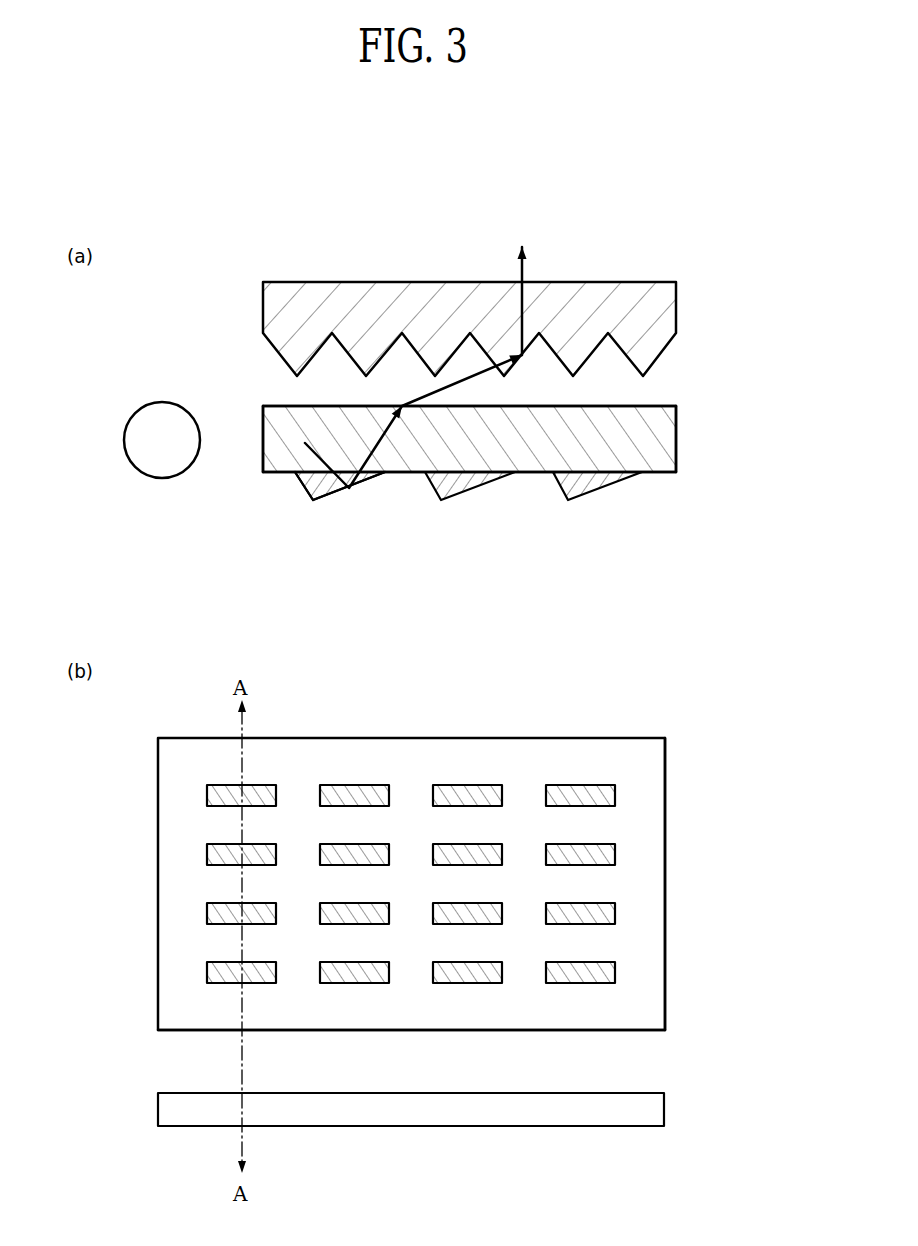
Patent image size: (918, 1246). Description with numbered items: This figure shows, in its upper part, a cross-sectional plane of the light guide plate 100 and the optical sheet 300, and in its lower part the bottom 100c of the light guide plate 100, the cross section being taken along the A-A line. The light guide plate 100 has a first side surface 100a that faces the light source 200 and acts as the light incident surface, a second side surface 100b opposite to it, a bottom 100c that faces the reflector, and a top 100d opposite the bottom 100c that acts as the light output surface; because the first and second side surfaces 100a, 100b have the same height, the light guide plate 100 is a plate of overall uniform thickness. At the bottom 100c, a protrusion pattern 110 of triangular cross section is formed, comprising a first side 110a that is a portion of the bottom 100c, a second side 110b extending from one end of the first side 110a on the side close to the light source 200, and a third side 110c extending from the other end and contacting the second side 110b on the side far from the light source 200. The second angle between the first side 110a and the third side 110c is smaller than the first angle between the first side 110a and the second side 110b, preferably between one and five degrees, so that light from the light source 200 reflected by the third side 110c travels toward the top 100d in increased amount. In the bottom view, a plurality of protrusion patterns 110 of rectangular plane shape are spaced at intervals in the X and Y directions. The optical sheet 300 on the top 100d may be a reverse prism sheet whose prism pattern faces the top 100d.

The optical sheet 300 is at (676, 304).
The light guide plate 100 is at (689, 467).
The first side surface 100a is at (263, 432).
The second side surface 100b is at (676, 437).
The bottom 100c is at (653, 474).
The top 100d is at (656, 406).
The protrusion pattern 110 is at (458, 483).
The first side 110a is at (468, 470).
The second side 110b is at (303, 478).
The third side 110c is at (338, 494).
The light source 200 is at (123, 437).